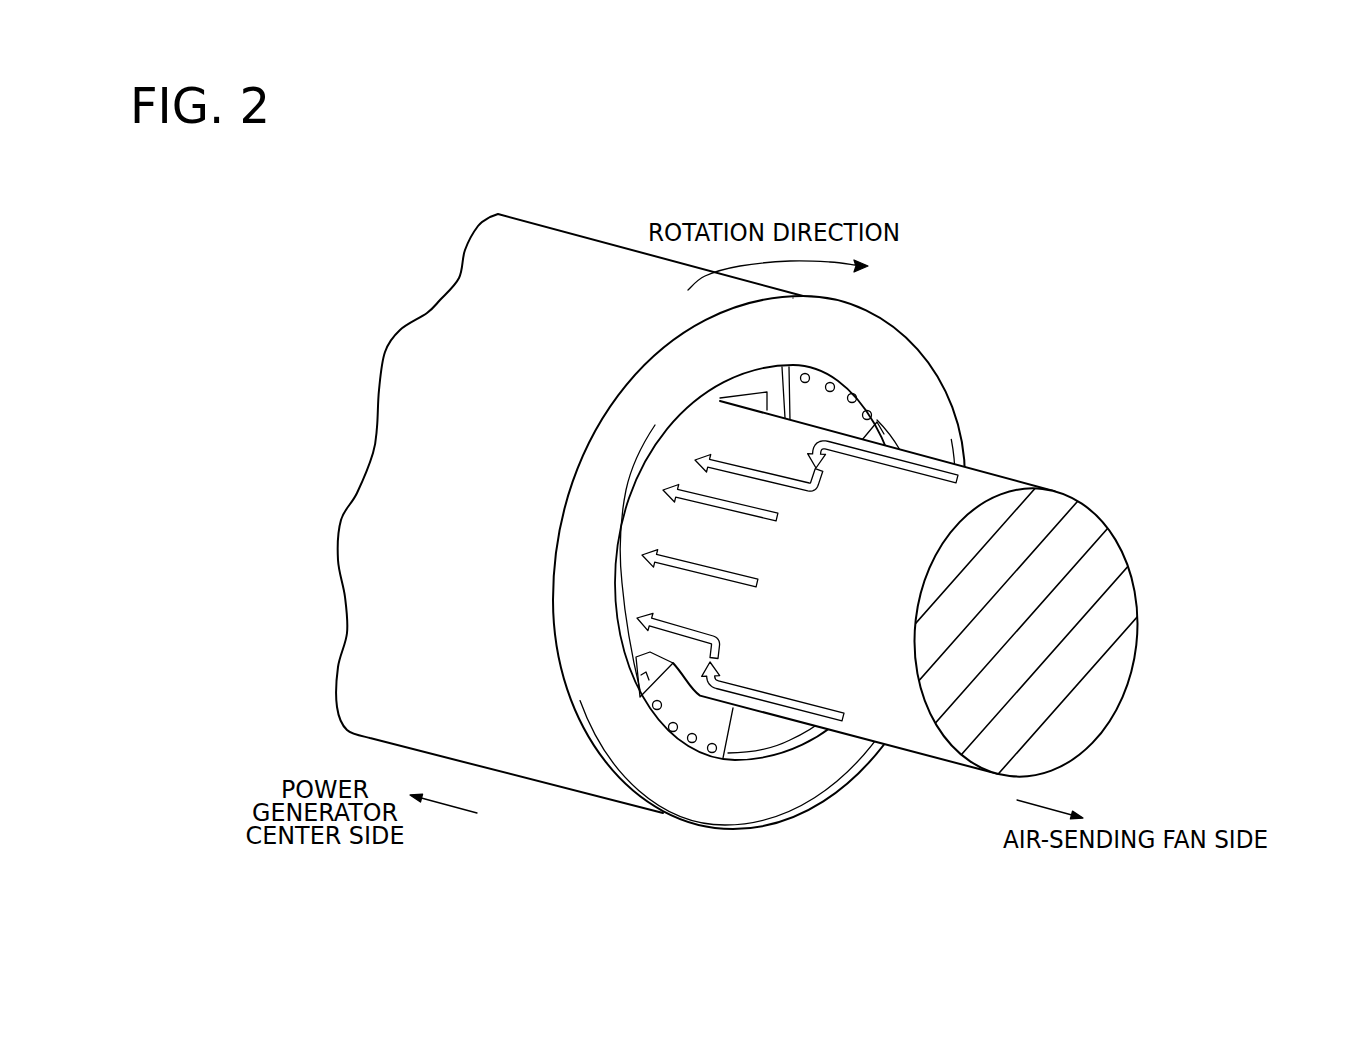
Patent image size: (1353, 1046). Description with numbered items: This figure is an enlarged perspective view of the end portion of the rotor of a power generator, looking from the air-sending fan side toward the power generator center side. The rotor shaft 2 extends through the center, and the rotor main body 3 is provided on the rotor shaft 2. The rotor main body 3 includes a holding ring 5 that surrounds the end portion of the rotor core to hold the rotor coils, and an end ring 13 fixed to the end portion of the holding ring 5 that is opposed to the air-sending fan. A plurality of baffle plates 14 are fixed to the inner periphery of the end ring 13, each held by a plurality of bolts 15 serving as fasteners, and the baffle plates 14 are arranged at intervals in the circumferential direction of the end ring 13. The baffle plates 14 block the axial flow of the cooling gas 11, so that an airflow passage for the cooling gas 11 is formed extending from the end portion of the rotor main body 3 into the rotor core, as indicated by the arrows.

The rotor shaft 2 is at (948, 732).
The rotor main body 3 is at (567, 790).
The holding ring 5 is at (552, 280).
The cooling gas 11 is at (707, 574).
The end ring 13 is at (777, 793).
The baffle plate 14 is at (843, 390).
The bolt 15 is at (855, 398).